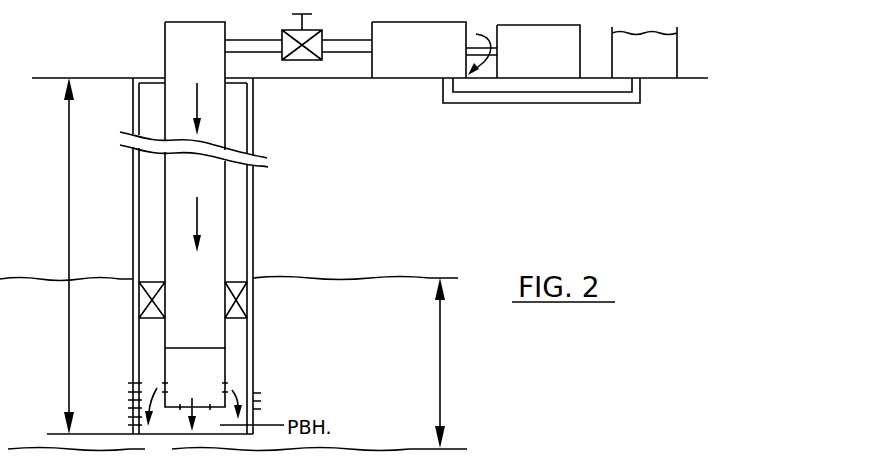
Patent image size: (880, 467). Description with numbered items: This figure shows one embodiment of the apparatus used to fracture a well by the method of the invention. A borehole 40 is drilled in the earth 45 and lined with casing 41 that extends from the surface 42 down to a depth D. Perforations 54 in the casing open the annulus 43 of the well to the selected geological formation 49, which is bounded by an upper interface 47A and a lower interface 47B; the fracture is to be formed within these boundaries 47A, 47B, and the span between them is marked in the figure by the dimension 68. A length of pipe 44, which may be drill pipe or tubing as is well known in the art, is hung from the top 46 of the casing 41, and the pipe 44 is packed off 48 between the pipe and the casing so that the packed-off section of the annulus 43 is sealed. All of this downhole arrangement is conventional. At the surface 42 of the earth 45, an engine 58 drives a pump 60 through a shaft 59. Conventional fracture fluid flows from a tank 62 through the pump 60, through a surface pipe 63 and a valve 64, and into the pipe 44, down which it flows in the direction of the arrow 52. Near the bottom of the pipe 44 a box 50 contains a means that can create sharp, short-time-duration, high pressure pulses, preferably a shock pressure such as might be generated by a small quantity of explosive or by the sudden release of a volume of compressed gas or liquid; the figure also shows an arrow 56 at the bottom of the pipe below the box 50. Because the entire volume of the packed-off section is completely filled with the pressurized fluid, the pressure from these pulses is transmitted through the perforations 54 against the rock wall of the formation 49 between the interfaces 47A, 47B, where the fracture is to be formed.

The borehole 40 is at (253, 195).
The casing 41 is at (236, 243).
The surface 42 is at (45, 77).
The annulus 43 is at (150, 353).
The pipe 44 is at (225, 140).
The earth 45 is at (426, 219).
The top of the casing 46 is at (155, 76).
The upper interface 47A is at (383, 276).
The lower interface 47B is at (407, 447).
The packer 48 is at (242, 303).
The formation 49 is at (358, 373).
The box 50 is at (212, 363).
The arrow 52 is at (197, 112).
The perforations 54 is at (132, 420).
The fluid outflow 56 is at (190, 408).
The engine 58 is at (543, 70).
The shaft 59 is at (484, 64).
The pump 60 is at (422, 72).
The tank 62 is at (660, 82).
The pipe 63 is at (352, 52).
The valve 64 is at (302, 60).
The formation thickness 68 is at (445, 385).
The depth D is at (66, 257).